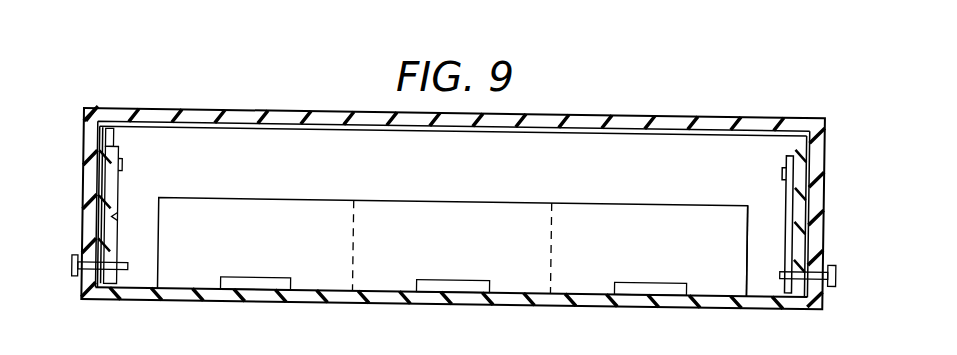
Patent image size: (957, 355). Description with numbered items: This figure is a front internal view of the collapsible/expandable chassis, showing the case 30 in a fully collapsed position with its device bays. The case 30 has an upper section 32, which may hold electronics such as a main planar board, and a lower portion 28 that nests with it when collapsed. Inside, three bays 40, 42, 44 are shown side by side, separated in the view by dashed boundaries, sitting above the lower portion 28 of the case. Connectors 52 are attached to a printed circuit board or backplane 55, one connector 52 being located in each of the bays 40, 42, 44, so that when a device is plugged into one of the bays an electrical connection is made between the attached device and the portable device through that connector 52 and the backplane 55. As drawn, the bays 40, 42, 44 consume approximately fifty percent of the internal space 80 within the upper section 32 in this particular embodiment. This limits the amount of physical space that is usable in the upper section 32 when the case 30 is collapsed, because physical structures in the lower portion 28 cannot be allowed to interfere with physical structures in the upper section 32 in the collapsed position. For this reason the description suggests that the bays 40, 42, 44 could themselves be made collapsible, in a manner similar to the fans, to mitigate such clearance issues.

The case 30 is at (305, 77).
The upper section 32 is at (83, 178).
The lower portion 28 is at (225, 299).
The internal space 80 is at (705, 186).
The printed circuit board or backplane 55 is at (390, 201).
The bay 40 is at (325, 249).
The bay 42 is at (520, 251).
The bay 44 is at (610, 251).
The connector 52 is at (259, 277).